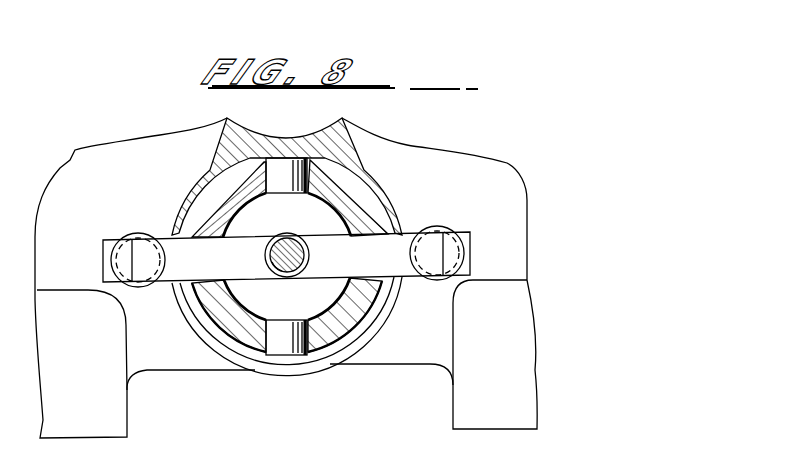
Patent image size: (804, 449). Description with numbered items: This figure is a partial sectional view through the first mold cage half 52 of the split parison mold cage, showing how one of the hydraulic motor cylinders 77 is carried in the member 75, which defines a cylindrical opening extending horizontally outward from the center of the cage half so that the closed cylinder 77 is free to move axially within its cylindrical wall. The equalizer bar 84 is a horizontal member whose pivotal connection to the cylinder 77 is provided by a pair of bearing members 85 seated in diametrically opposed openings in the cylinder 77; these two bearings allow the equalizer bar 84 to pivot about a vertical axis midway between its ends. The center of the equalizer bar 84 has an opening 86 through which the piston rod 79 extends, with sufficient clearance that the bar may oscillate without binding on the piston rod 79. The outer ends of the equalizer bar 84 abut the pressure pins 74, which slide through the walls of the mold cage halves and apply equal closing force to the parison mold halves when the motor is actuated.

The first mold cage half 52 is at (517, 295).
The pressure pins 74 is at (128, 237).
The member 75 is at (360, 167).
The closed cylinder 77 is at (360, 207).
The piston rod 79 is at (290, 256).
The equalizer bar 84 is at (167, 245).
The bearing members 85 is at (285, 172).
The opening 86 is at (281, 265).